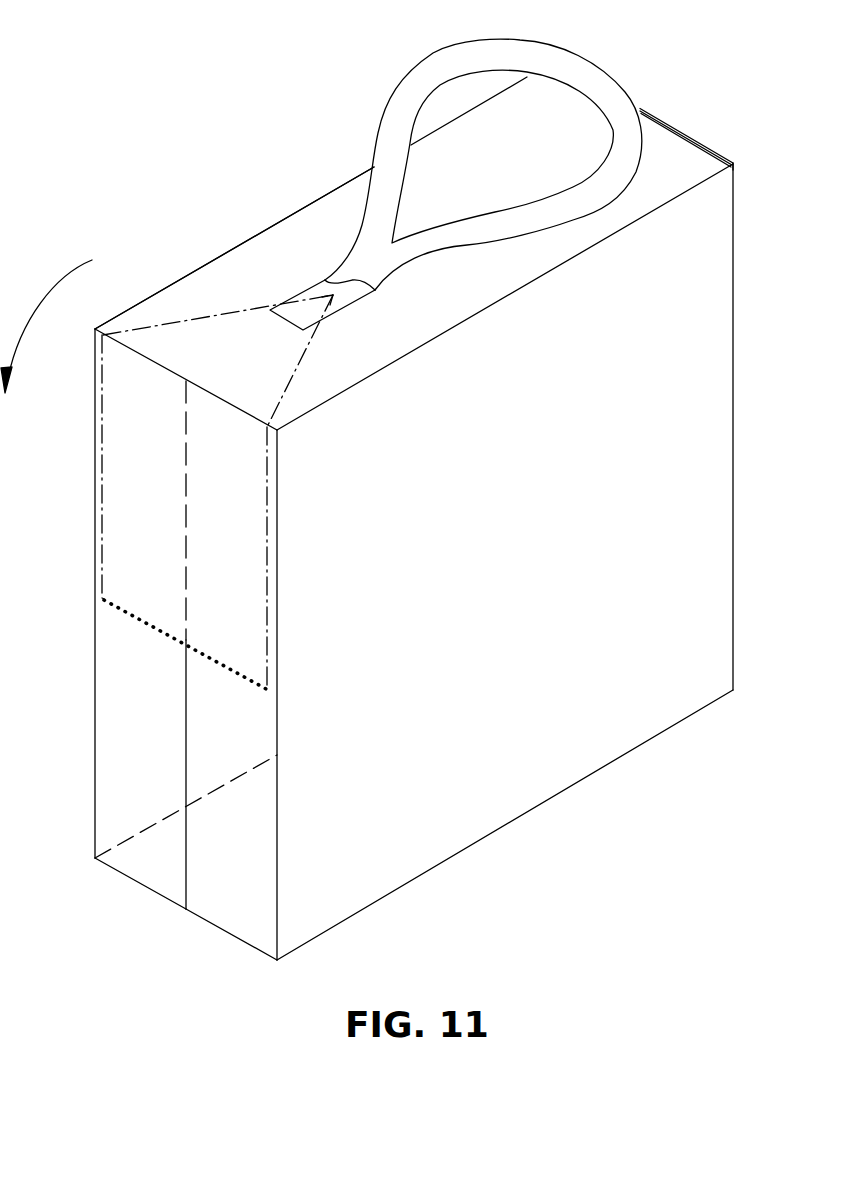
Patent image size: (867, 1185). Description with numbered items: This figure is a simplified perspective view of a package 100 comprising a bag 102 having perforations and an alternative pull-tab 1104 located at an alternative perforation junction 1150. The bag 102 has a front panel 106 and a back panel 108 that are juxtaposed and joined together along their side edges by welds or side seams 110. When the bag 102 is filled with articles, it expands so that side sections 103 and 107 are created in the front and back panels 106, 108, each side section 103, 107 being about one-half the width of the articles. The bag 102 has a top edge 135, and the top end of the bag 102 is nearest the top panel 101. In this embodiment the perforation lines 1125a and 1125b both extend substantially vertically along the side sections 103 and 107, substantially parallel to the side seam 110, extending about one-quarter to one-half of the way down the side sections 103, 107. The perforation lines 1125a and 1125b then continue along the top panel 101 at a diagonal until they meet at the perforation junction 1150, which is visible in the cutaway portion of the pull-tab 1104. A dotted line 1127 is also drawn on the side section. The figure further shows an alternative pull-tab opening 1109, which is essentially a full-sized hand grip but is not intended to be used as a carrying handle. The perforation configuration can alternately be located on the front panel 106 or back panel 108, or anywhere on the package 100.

The package 100 is at (257, 75).
The top panel 101 is at (355, 180).
The bag 102 is at (734, 430).
The side section 103 is at (228, 928).
The front panel 106 is at (622, 750).
The side section 107 is at (135, 873).
The back panel 108 is at (95, 780).
The side seam 110 is at (186, 748).
The top edge 135 is at (224, 400).
The pull-tab 1104 is at (345, 305).
The pull-tab opening 1109 is at (453, 98).
The perforation line 1125a is at (102, 462).
The perforation line 1125b is at (268, 551).
The perforation / tear line 1127 is at (155, 628).
The perforation junction 1150 is at (300, 310).